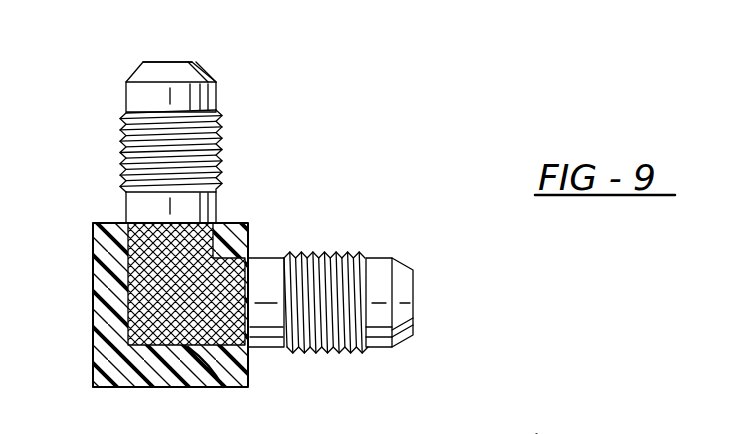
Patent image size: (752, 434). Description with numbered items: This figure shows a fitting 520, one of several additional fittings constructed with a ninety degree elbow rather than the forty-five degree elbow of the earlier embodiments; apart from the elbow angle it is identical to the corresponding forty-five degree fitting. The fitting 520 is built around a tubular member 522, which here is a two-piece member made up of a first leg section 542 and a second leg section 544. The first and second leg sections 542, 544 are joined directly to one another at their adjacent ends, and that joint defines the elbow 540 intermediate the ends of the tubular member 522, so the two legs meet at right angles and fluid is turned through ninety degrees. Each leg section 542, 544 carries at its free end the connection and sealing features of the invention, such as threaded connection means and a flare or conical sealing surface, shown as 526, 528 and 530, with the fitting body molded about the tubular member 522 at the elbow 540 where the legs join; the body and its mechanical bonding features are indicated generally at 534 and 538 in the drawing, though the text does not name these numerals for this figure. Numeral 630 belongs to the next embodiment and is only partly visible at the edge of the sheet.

The fitting 520 is at (292, 197).
The tubular member 522 is at (127, 211).
The threads 526 is at (122, 158).
The flared nose 528 is at (134, 73).
The sealing surface 530 is at (206, 70).
The block body 534 is at (93, 277).
The joint line 538 is at (222, 388).
The elbow 540 is at (93, 347).
The first leg section 542 is at (213, 100).
The second leg section 544 is at (380, 257).
The adjacent component 630 is at (536, 433).